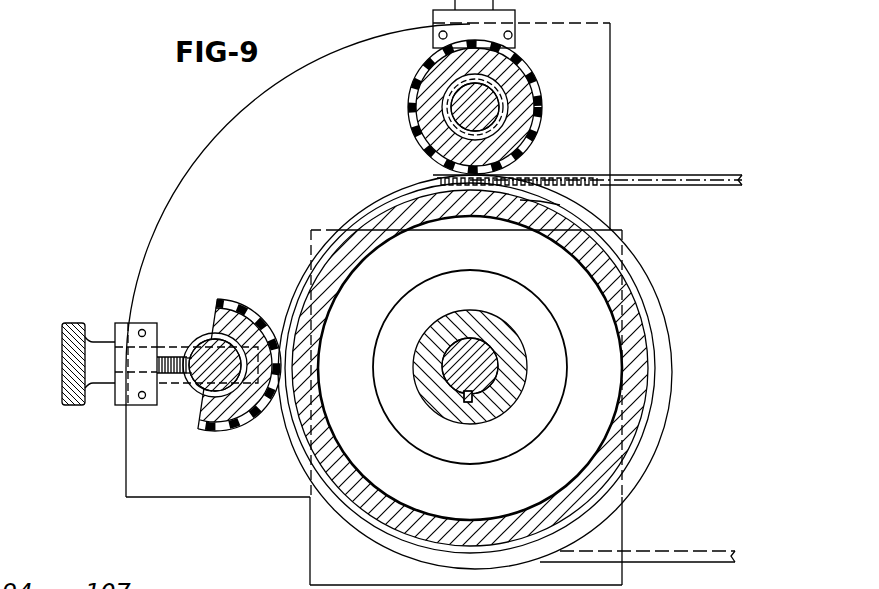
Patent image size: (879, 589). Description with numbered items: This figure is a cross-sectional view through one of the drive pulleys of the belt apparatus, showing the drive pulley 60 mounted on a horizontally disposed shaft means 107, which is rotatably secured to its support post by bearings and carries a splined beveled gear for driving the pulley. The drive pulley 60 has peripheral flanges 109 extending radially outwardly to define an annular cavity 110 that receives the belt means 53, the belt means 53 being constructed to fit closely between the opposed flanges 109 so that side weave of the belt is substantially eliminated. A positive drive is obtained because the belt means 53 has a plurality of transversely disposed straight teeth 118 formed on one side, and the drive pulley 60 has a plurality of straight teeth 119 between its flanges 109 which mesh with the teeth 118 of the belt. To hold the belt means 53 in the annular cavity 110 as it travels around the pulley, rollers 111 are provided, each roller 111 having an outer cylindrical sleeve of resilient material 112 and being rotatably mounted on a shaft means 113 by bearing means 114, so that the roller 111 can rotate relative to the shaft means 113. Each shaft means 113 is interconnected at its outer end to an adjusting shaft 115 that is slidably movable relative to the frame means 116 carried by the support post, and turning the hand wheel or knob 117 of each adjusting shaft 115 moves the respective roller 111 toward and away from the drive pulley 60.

The belt means 53 is at (660, 181).
The drive pulley 60 is at (479, 510).
The shaft means 107 is at (470, 366).
The peripheral flanges 109 is at (672, 363).
The annular cavity 110 is at (652, 299).
The roller 111 is at (578, 62).
The outer cylindrical sleeve of resilient material 112 is at (412, 93).
The shaft means 113 is at (485, 105).
The bearing means 114 is at (448, 124).
The adjusting shaft 115 is at (172, 356).
The frame means 116 is at (184, 191).
The hand wheel or knob 117 is at (62, 352).
The straight teeth 118 is at (547, 200).
The straight teeth 119 is at (548, 203).